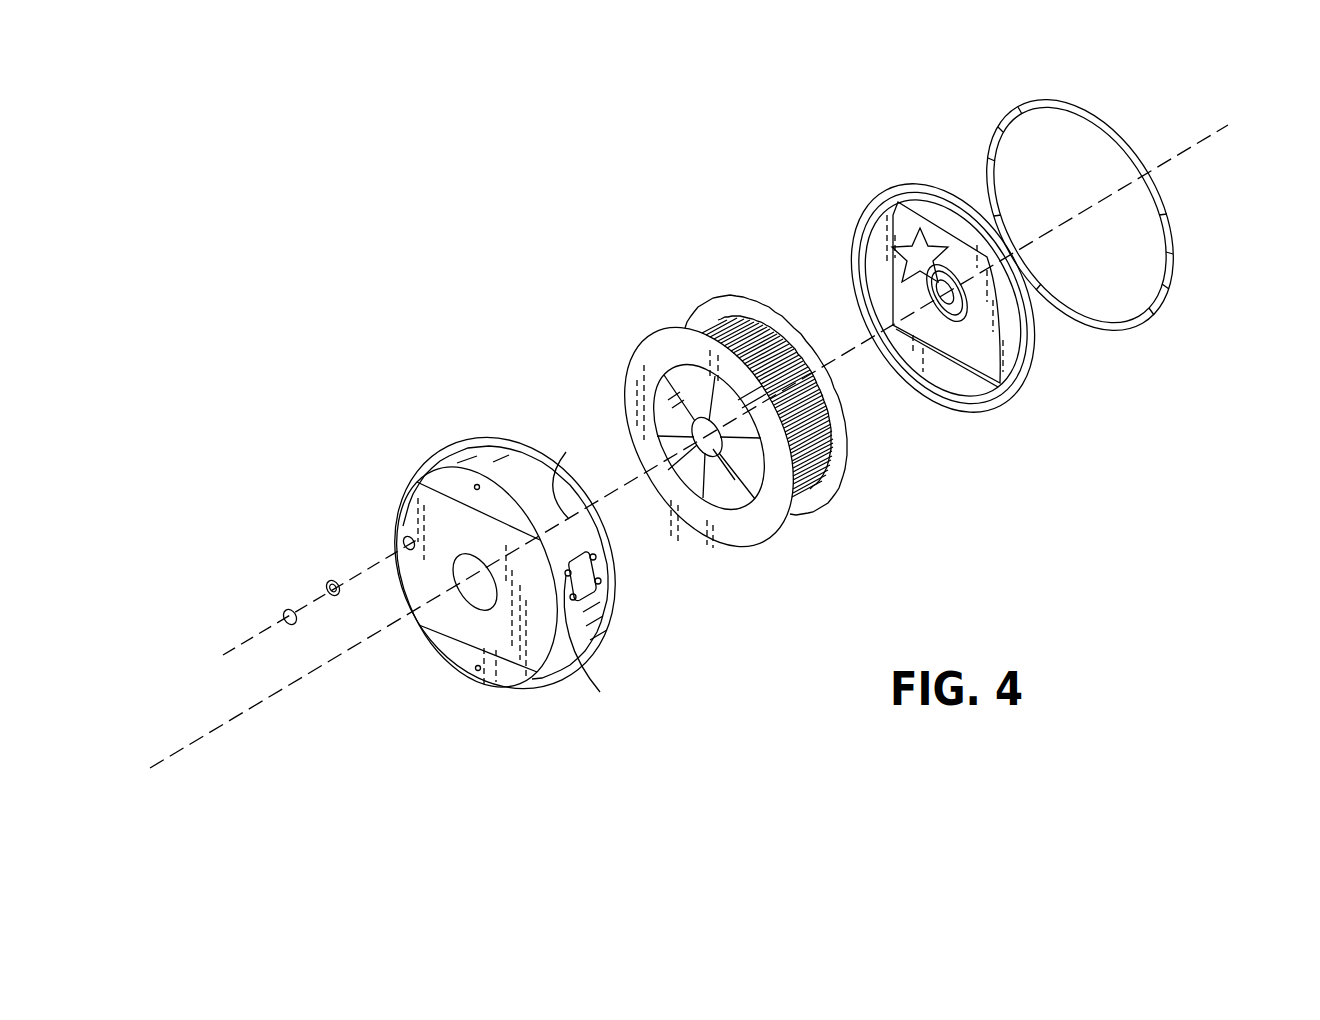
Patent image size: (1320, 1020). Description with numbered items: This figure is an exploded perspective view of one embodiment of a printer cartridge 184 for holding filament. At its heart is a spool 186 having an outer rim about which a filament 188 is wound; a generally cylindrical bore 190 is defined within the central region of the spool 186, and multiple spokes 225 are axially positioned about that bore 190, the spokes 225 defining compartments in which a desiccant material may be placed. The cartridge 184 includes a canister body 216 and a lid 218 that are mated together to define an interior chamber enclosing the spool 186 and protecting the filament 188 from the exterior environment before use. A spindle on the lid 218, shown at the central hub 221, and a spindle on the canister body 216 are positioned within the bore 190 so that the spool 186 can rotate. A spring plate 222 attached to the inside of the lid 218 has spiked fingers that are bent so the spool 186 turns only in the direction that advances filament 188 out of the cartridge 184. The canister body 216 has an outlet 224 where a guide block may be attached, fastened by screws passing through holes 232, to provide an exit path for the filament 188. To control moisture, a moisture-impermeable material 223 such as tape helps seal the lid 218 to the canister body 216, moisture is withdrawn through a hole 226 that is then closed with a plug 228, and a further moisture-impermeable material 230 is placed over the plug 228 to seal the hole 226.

The cartridge 184 is at (418, 330).
The spool 186 is at (732, 308).
The filament 188 is at (828, 466).
The bore 190 is at (698, 433).
The canister body 216 is at (483, 455).
The lid 218 is at (1044, 355).
The cover hub 221 is at (957, 302).
The spring plate 222 is at (918, 262).
The moisture-impermeable material 223 is at (1172, 272).
The outlet 224 is at (594, 590).
The spokes 225 is at (755, 492).
The hole 226 is at (404, 538).
The plug 228 is at (331, 582).
The moisture-impermeable material 230 is at (287, 611).
The holes 232 is at (549, 526).